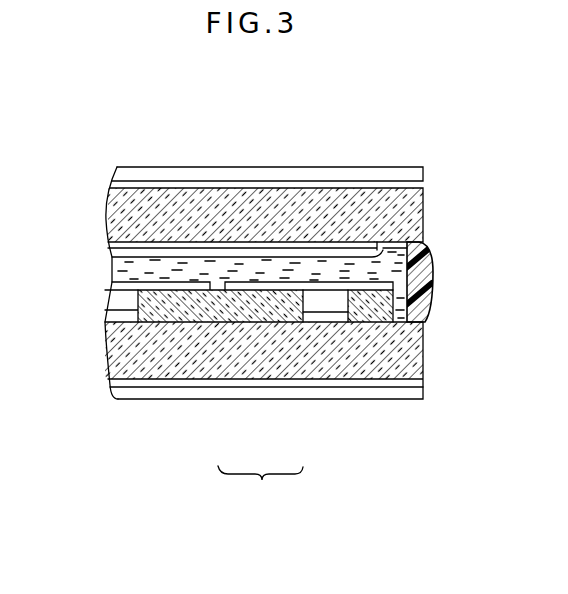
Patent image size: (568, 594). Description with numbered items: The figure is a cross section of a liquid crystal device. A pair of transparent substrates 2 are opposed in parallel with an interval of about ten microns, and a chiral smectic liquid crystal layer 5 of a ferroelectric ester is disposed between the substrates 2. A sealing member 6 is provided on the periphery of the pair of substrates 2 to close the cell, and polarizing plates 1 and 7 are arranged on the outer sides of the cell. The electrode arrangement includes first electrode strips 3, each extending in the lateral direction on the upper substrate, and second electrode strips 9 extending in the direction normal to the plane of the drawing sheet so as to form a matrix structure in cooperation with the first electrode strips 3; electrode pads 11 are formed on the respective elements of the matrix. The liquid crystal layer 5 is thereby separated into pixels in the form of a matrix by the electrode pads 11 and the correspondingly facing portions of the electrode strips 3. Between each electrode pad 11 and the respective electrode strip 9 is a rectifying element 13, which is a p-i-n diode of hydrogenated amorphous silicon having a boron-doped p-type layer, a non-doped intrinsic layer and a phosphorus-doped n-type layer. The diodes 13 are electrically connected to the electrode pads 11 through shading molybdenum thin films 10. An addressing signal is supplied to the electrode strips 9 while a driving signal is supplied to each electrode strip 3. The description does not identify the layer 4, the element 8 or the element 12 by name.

The polarizing plate 1 is at (371, 167).
The transparent substrate 2 is at (425, 188).
The first electrode strip 3 is at (378, 243).
The alignment film 4 is at (118, 252).
The chiral smectic liquid crystal layer 5 is at (123, 272).
The sealing member 6 is at (426, 274).
The polarizing plate 7 is at (365, 393).
The gate electrode 8 is at (212, 313).
The second electrode strip 9 is at (333, 316).
The shading Mo thin film 10 is at (313, 294).
The electrode pad 11 is at (268, 287).
The source electrode 12 is at (320, 304).
The rectifying element 13 is at (260, 490).